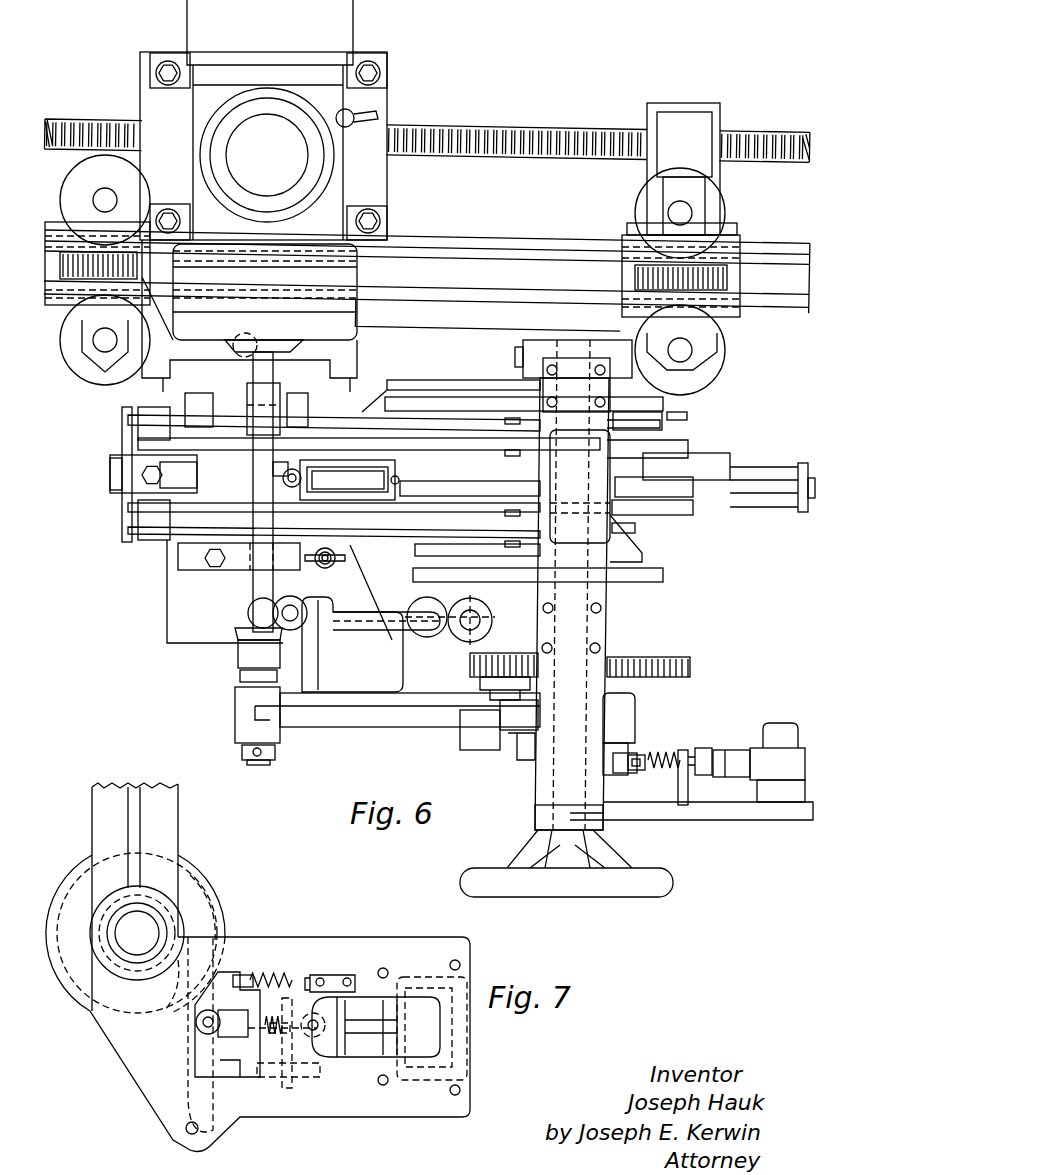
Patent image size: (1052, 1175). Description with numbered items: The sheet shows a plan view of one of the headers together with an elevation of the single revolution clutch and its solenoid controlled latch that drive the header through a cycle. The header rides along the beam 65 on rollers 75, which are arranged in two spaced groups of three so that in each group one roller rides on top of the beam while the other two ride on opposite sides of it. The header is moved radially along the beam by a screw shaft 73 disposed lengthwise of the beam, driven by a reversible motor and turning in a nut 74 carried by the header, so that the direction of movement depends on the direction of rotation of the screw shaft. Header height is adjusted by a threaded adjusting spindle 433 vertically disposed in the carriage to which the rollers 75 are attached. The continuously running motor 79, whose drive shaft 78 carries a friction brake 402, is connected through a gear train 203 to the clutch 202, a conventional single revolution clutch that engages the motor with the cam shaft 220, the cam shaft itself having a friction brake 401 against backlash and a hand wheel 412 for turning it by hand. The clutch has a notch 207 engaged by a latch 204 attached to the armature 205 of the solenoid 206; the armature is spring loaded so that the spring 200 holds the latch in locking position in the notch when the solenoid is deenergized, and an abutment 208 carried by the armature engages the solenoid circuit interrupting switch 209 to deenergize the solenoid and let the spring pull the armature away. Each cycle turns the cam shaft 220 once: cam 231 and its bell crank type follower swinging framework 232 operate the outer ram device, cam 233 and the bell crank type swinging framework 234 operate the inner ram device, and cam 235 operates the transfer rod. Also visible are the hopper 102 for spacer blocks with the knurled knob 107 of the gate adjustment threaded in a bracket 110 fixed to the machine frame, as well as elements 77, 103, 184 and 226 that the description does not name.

In FIG. 6, the beam 65 is at (530, 250).
In FIG. 6, the screw shaft 73 is at (561, 137).
In FIG. 6, the nut 74 is at (690, 118).
In FIG. 6, the rollers 75 is at (72, 183).
In FIG. 6, the gear 77 is at (660, 660).
In FIG. 6, the drive shaft 78 is at (253, 598).
In FIG. 6, the motor 79 is at (288, 40).
In FIG. 6, the hopper 102 is at (347, 480).
In FIG. 6, the screw 103 is at (398, 479).
In FIG. 6, the knurled knob 107 is at (283, 480).
In FIG. 6, the bracket 110 is at (270, 472).
In FIG. 6, the block 184 is at (120, 495).
In FIG. 6, the spring 200 is at (658, 775).
In FIG. 6, the clutch 202 is at (682, 713).
In FIG. 7, the clutch 202 is at (258, 882).
In FIG. 6, the gear train 203 is at (385, 654).
In FIG. 7, the latch 204 is at (182, 1020).
In FIG. 6, the armature 205 is at (738, 750).
In FIG. 7, the armature 205 is at (372, 1038).
In FIG. 6, the solenoid 206 is at (780, 730).
In FIG. 7, the solenoid 206 is at (257, 1030).
In FIG. 7, the notch 207 is at (222, 912).
In FIG. 7, the abutment 208 is at (288, 975).
In FIG. 7, the solenoid circuit interrupting switch 209 is at (338, 972).
In FIG. 6, the cam shaft 220 is at (560, 789).
In FIG. 7, the cam shaft 220 is at (135, 950).
In FIG. 6, the cylinder 226 is at (728, 462).
In FIG. 6, the cam 231 is at (478, 410).
In FIG. 6, the bell crank type follower swinging framework 232 is at (413, 422).
In FIG. 6, the cam 233 is at (633, 583).
In FIG. 6, the bell crank type swinging framework 234 is at (128, 445).
In FIG. 6, the cam 235 is at (640, 531).
In FIG. 6, the friction brake 401 is at (553, 360).
In FIG. 6, the friction brake 402 is at (312, 568).
In FIG. 6, the hand wheel 412 is at (655, 885).
In FIG. 6, the threaded adjusting spindle 433 is at (257, 342).